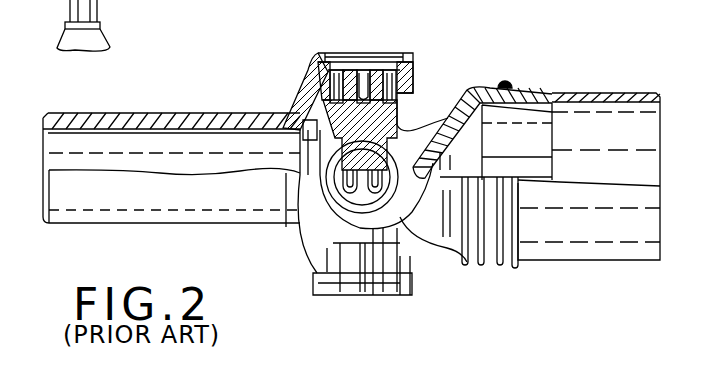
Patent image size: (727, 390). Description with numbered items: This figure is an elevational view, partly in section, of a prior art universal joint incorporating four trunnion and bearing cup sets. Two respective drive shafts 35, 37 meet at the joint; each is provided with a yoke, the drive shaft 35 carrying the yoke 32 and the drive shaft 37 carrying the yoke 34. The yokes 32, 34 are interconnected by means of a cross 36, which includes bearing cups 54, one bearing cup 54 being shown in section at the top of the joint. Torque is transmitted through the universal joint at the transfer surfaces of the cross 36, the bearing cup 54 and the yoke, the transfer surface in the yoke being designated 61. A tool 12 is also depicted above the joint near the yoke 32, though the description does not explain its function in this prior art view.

The tool 12 is at (112, 27).
The yoke 32 is at (295, 100).
The yoke 34 is at (390, 205).
The drive shaft 35 is at (207, 114).
The cross 36 is at (400, 97).
The drive shaft 37 is at (610, 92).
The bearing cup 54 is at (360, 65).
The transfer surface 61 is at (332, 62).